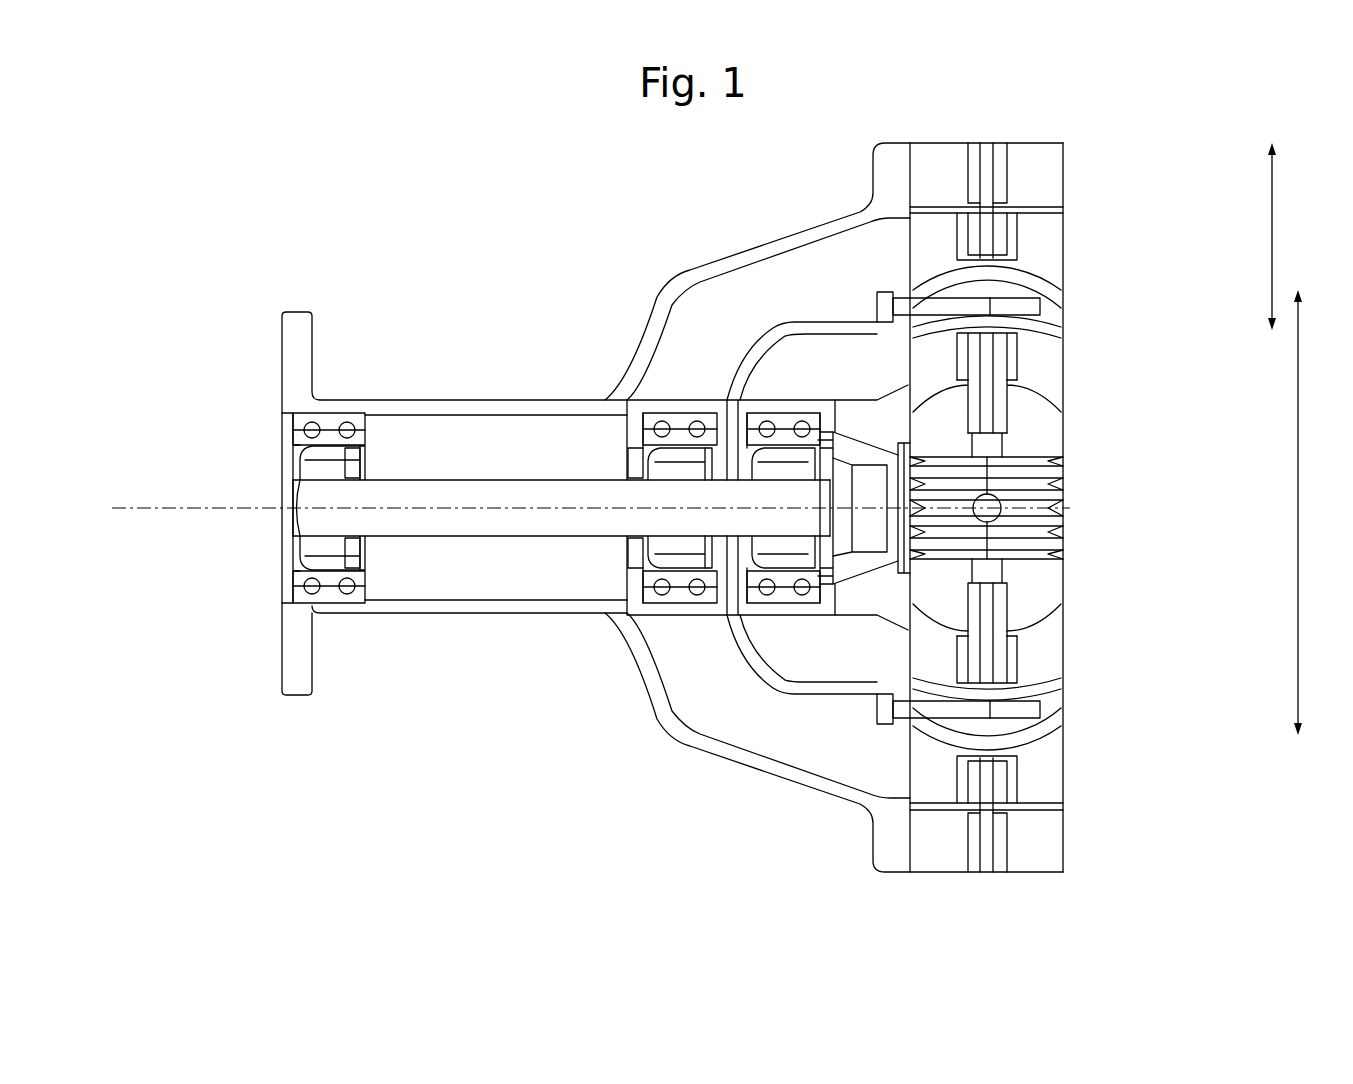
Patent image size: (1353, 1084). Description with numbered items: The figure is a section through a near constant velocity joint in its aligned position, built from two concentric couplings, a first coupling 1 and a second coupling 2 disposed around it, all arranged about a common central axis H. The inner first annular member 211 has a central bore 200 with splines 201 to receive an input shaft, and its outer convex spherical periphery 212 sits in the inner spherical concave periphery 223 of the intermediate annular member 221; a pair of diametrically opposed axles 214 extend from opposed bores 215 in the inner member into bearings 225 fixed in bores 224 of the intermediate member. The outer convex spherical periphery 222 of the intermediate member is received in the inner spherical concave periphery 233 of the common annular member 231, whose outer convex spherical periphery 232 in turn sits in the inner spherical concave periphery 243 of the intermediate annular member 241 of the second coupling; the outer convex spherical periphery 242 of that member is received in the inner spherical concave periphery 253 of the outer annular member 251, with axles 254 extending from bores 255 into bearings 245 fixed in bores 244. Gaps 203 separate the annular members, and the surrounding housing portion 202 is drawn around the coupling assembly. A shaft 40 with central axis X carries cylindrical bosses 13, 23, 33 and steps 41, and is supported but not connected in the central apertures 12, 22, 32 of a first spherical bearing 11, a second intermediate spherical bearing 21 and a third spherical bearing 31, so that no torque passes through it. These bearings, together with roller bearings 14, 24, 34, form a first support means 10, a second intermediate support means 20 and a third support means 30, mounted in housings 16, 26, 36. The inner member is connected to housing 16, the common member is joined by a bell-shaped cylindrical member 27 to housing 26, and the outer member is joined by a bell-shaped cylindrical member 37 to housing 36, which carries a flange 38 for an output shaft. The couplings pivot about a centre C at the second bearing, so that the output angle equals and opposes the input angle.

The central axis of the axle and bearings X is at (579, 507).
The first coupling 1 is at (1308, 512).
The second coupling 2 is at (1283, 236).
The first support means 10 is at (822, 590).
The first spherical bearing 11 is at (735, 383).
The central aperture of the first spherical bearing 12 is at (748, 650).
The cylindrical boss 13 is at (795, 590).
The first roller bearing 14 is at (812, 430).
The housing of the first roller bearing 16 is at (790, 460).
The second intermediate support means 20 is at (642, 432).
The second intermediate spherical bearing 21 is at (658, 458).
The central aperture of the second spherical bearing 22 is at (655, 545).
The cylindrical boss 23 is at (693, 540).
The second roller bearing 24 is at (665, 427).
The housing of the second roller bearing 26 is at (668, 455).
The cylindrical member 27 is at (717, 400).
The third support means 30 is at (313, 462).
The third spherical bearing 31 is at (349, 457).
The central aperture of the third spherical bearing 32 is at (327, 547).
The cylindrical boss 33 is at (348, 540).
The third roller bearing 34 is at (342, 412).
The housing of the third roller bearing 36 is at (320, 417).
The cylindrical member 37 is at (582, 403).
The flange 38 is at (280, 357).
The shaft 40 is at (437, 500).
The steps 41 is at (358, 462).
The pivot centre C is at (640, 565).
The common central axis H is at (1055, 538).
The central bore 200 is at (1060, 517).
The splines 201 is at (1053, 490).
The gear housing 202 is at (925, 390).
The gaps 203 is at (1037, 727).
The inner first annular member 211 is at (1033, 440).
The outer convex spherical periphery 212 is at (1013, 393).
The axles 214 is at (997, 610).
The bores 215 is at (1010, 598).
The intermediate annular member 221 is at (1040, 360).
The outer convex spherical periphery 222 is at (1040, 330).
The inner spherical concave periphery 223 is at (1020, 385).
The bores 224 is at (1040, 655).
The bearings 225 is at (1020, 645).
The common annular member 231 is at (1053, 300).
The outer convex spherical periphery 232 is at (1040, 272).
The inner spherical concave periphery 233 is at (1043, 323).
The intermediate annular member of the second coupling 241 is at (1043, 233).
The outer convex spherical periphery 242 is at (1040, 207).
The inner spherical concave periphery 243 is at (1040, 257).
The bores 244 is at (1040, 805).
The bearings 245 is at (1013, 770).
The outer annular member 251 is at (1033, 175).
The inner spherical concave periphery 253 is at (998, 163).
The axles 254 is at (1000, 837).
The bores 255 is at (1007, 863).